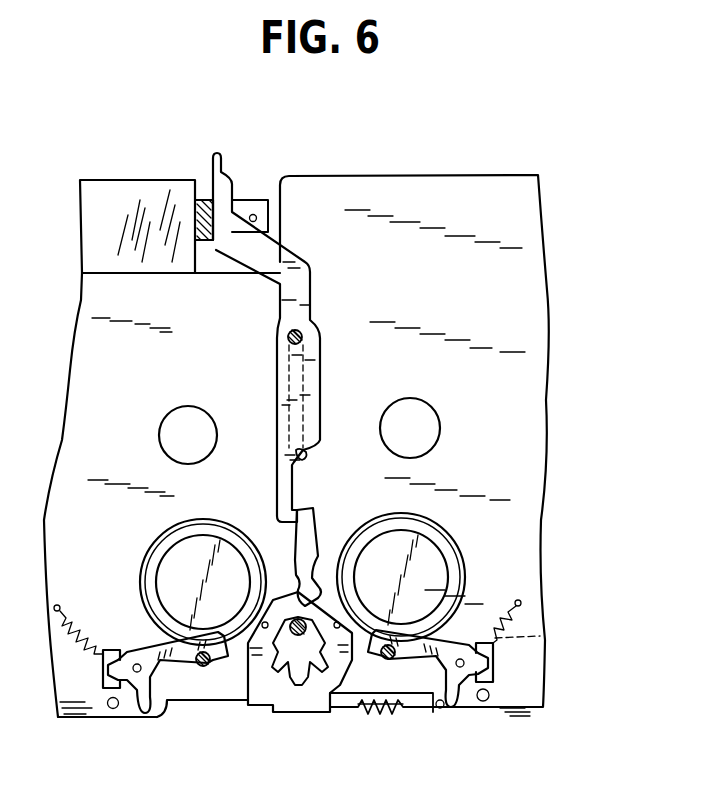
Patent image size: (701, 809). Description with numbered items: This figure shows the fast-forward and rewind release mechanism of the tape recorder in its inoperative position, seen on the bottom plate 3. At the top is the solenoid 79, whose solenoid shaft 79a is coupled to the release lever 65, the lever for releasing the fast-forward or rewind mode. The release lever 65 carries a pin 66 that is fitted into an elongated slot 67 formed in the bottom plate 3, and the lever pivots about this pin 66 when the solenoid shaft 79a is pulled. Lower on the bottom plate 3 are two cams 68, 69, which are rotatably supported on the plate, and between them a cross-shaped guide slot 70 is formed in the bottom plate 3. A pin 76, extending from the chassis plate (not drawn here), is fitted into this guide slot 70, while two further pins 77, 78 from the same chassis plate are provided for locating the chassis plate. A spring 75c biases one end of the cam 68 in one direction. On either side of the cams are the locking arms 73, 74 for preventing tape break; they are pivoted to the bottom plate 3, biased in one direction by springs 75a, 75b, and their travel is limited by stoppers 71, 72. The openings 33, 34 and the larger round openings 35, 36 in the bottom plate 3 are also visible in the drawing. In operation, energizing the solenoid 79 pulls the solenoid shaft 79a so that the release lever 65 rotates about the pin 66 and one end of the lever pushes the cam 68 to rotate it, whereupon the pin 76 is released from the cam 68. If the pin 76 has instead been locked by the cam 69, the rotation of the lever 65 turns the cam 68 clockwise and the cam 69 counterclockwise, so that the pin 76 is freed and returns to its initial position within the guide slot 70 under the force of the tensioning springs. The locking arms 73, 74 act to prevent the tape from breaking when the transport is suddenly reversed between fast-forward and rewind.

The bottom plate 3 is at (517, 675).
The hole 33 is at (193, 418).
The hole 34 is at (418, 422).
The ring bearing 35 is at (205, 548).
The ring bearing 36 is at (420, 552).
The release lever 65 is at (305, 276).
The pin 66 is at (305, 338).
The elongated slot 67 is at (312, 455).
The cam 68 is at (257, 713).
The cam 69 is at (341, 700).
The cross-shaped guide slot 70 is at (300, 680).
The stopper 71 is at (113, 709).
The stopper 72 is at (483, 701).
The locking arm 73 is at (148, 660).
The locking arm 74 is at (457, 645).
The spring 75a is at (74, 608).
The spring 75b is at (541, 640).
The spring 75c is at (375, 712).
The pin 76 is at (295, 615).
The pin 77 is at (203, 666).
The pin 78 is at (392, 658).
The solenoid 79 is at (166, 178).
The solenoid shaft 79a is at (256, 208).